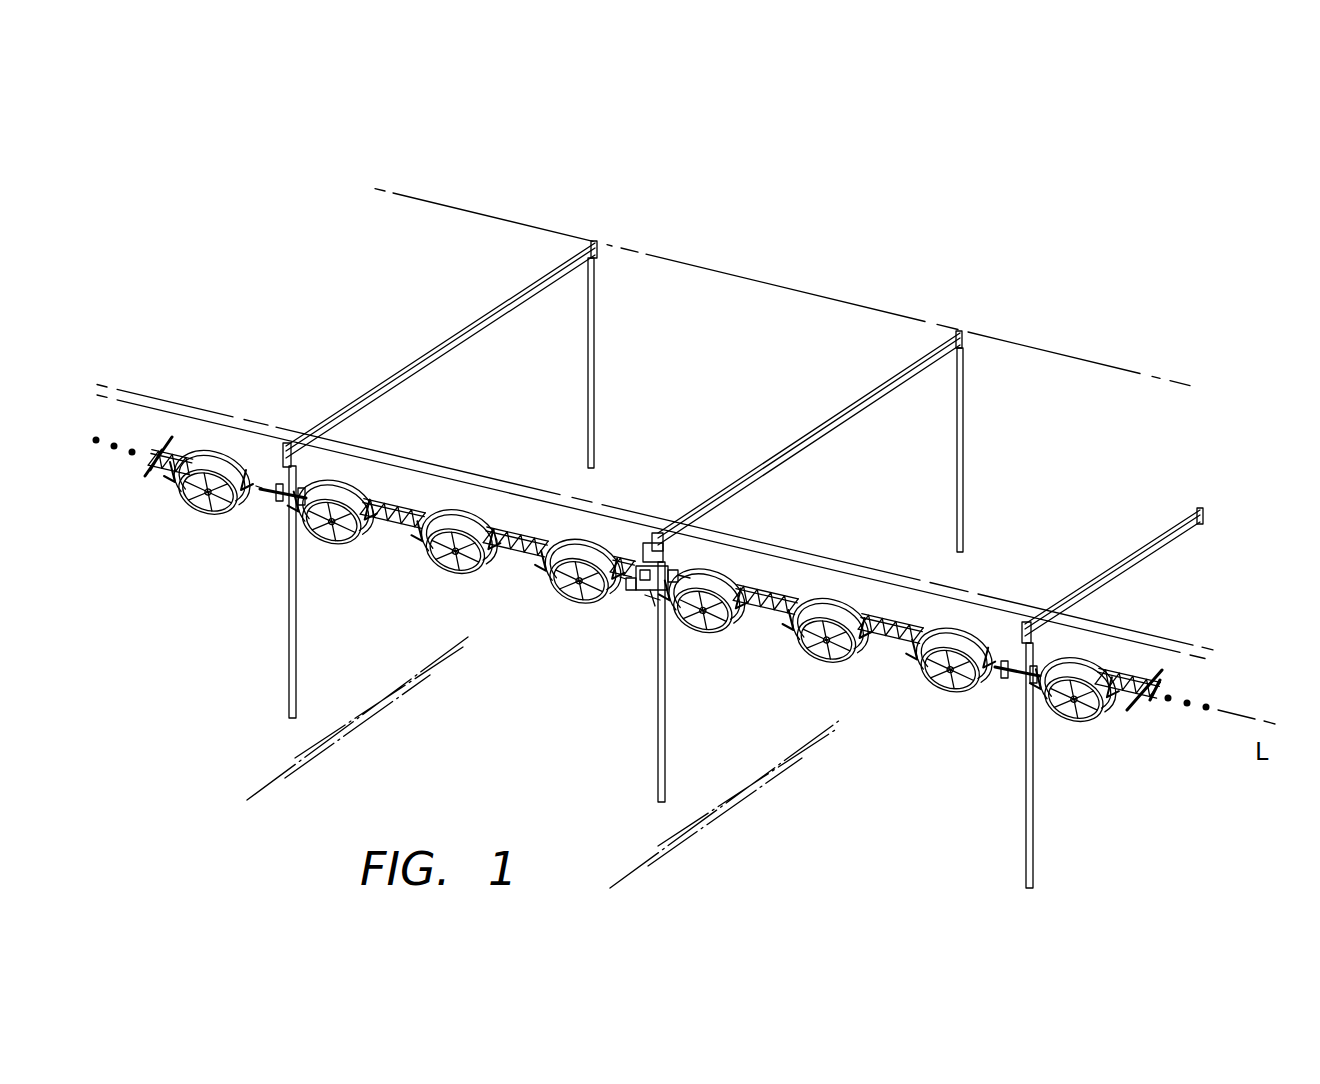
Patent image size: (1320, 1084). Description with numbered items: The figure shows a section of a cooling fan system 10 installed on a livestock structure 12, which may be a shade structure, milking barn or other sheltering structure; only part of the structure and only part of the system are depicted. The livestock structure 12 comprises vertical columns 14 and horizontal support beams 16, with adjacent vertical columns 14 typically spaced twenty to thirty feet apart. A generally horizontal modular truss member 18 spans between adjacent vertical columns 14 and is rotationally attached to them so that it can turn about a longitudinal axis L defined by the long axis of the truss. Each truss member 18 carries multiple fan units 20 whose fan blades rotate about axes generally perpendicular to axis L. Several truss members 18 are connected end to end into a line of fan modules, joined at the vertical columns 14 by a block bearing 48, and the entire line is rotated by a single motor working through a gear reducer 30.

The cooling fan system 10 is at (231, 262).
The livestock structure 12 is at (775, 282).
The vertical columns 14 is at (588, 396).
The horizontal support beams 16 is at (453, 336).
The truss member 18 is at (180, 450).
The fan units 20 is at (198, 513).
The gear reducer 30 is at (634, 562).
The block bearing 48 is at (278, 484).